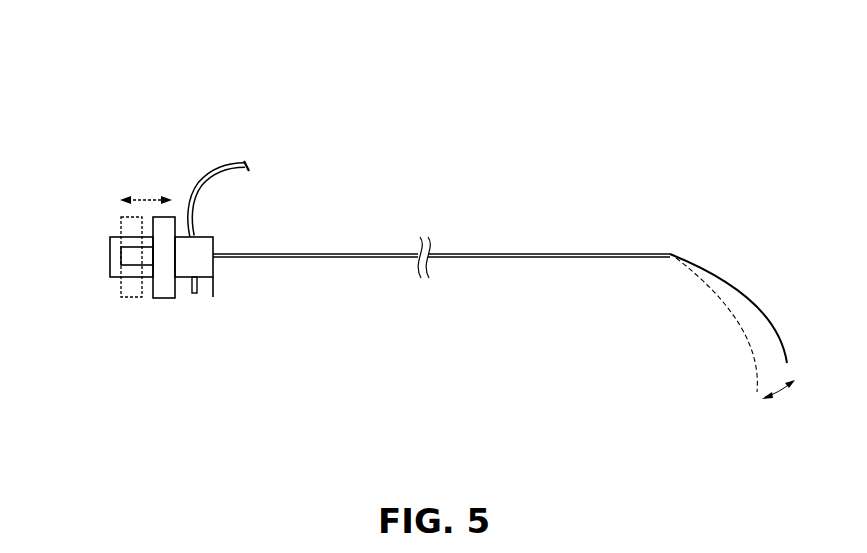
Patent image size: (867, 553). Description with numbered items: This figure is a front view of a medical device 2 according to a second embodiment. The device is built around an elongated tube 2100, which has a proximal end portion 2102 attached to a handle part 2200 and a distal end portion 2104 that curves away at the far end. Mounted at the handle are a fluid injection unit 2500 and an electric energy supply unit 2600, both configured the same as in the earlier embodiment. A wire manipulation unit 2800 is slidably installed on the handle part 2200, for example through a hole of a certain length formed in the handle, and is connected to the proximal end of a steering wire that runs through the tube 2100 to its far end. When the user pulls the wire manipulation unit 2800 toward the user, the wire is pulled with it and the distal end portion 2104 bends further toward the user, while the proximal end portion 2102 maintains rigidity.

The medical device 2 is at (143, 52).
The tube 2100 is at (541, 246).
The proximal end portion 2102 is at (315, 253).
The distal end portion 2104 is at (762, 305).
The handle part 2200 is at (110, 255).
The fluid injection unit 2500 is at (194, 293).
The electric energy supply unit 2600 is at (203, 173).
The wire manipulation unit 2800 is at (160, 298).